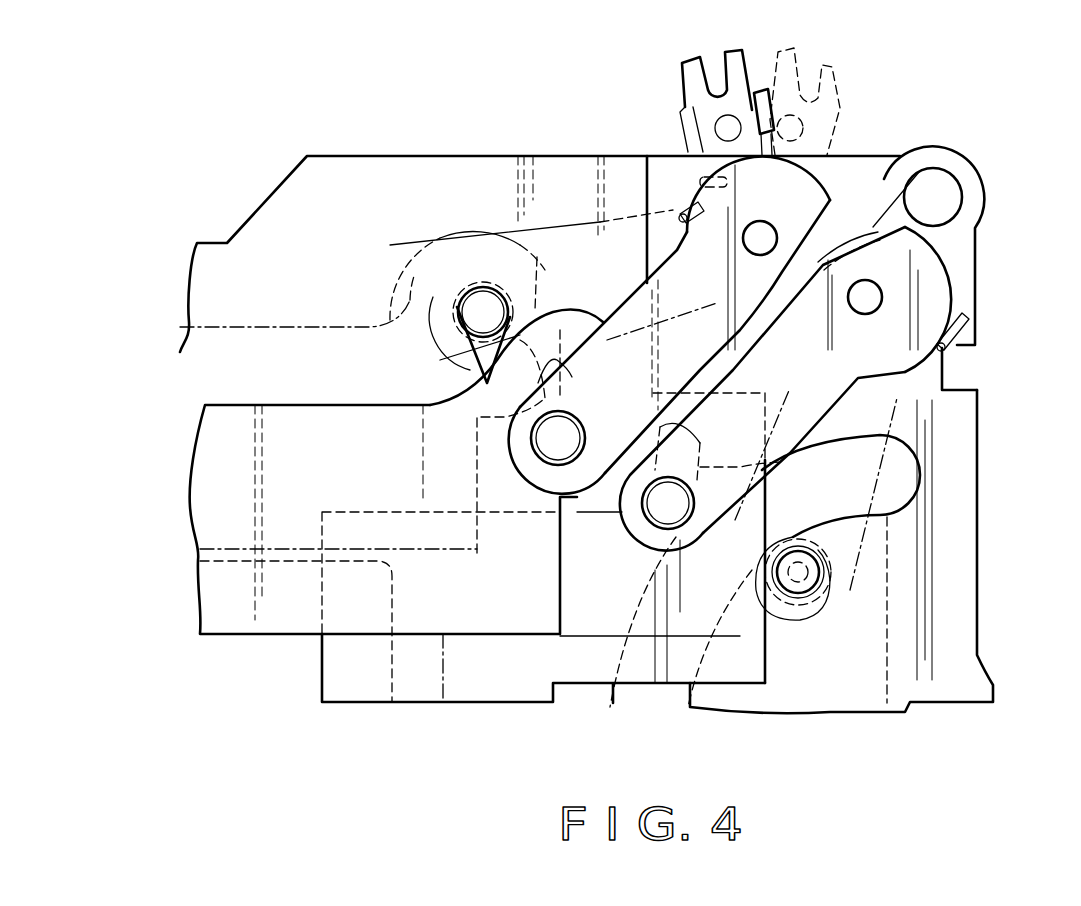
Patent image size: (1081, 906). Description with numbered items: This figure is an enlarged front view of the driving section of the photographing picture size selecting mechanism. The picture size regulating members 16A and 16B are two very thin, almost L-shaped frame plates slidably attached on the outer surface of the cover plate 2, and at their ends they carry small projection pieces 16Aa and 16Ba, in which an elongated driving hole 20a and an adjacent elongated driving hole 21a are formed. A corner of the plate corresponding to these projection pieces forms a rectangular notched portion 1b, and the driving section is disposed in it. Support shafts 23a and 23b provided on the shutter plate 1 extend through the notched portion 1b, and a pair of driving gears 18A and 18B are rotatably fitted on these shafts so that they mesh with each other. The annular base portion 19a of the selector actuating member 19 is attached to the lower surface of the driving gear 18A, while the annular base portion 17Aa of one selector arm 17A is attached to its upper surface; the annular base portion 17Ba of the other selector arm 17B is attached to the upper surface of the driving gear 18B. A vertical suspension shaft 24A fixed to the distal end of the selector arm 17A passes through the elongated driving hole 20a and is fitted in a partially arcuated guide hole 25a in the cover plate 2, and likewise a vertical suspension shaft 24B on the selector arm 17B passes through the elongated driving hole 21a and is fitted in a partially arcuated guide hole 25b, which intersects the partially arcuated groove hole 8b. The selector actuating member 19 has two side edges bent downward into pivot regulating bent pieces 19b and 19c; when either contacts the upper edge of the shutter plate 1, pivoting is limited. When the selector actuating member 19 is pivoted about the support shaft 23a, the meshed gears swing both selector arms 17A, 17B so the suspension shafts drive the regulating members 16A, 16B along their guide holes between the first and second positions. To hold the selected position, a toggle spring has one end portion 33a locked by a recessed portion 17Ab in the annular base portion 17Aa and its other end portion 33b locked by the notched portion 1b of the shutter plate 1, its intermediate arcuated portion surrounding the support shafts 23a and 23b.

The shutter plate 1 is at (975, 195).
The notched portion 1b is at (943, 368).
The cover plate 2 is at (587, 165).
The partially arcuated groove hole 8b is at (907, 477).
The picture size regulating member 16A is at (318, 405).
The small projection piece 16Aa is at (543, 320).
The picture size regulating member 16B is at (375, 695).
The small projection piece 16Ba is at (736, 678).
The selector arm 17A is at (575, 165).
The annular base portion 17Aa is at (800, 183).
The recessed portion 17Ab is at (653, 185).
The selector arm 17B is at (828, 397).
The annular base portion 17Ba is at (937, 300).
The driving gear 18A is at (852, 200).
The driving gear 18B is at (915, 205).
The selector actuating member 19 is at (742, 57).
The annular base portion 19a is at (713, 73).
The pivot regulating bent piece 19b is at (685, 105).
The pivot regulating bent piece 19c is at (790, 90).
The elongated driving hole 20a is at (562, 337).
The elongated driving hole 21a is at (770, 478).
The support shaft 23a is at (768, 225).
The support shaft 23b is at (868, 283).
The vertical suspension shaft 24A is at (527, 443).
The vertical suspension shaft 24B is at (678, 508).
The partially arcuated guide hole 25a is at (455, 308).
The partially arcuated guide hole 25b is at (808, 590).
The one end portion of the toggle spring 33a is at (690, 205).
The other end portion of the toggle spring 33b is at (953, 320).